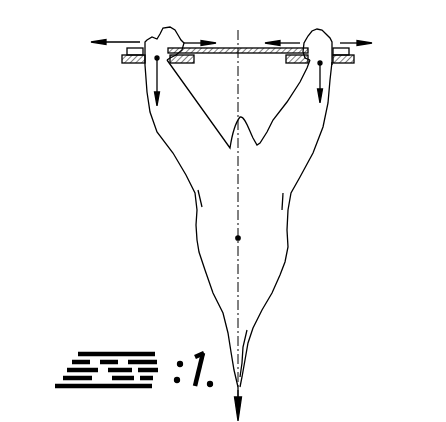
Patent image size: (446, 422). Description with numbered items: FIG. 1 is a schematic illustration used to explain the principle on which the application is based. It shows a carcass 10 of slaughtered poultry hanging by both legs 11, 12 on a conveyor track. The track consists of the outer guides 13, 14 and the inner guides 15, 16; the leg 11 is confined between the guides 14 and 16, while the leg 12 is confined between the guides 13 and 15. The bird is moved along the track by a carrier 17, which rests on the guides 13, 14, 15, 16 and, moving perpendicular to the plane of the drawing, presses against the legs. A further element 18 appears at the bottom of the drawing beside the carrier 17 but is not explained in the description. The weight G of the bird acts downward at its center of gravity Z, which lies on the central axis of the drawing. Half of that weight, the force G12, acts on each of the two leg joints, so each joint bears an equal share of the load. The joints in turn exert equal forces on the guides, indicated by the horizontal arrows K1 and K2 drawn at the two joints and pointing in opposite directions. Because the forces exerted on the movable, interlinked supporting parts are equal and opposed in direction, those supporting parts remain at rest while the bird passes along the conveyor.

The carcass 10 is at (277, 253).
The leg 11 is at (317, 125).
The leg 12 is at (173, 130).
The outer guide 13 is at (132, 63).
The outer guide 14 is at (347, 60).
The inner guide 15 is at (185, 60).
The inner guide 16 is at (300, 63).
The carrier 17 is at (203, 417).
The right support 18 is at (324, 417).
The force K1 is at (298, 40).
The force K2 is at (181, 40).
The force G/2 G12 is at (377, 118).
The weight G is at (247, 404).
The center of gravity Z is at (246, 232).